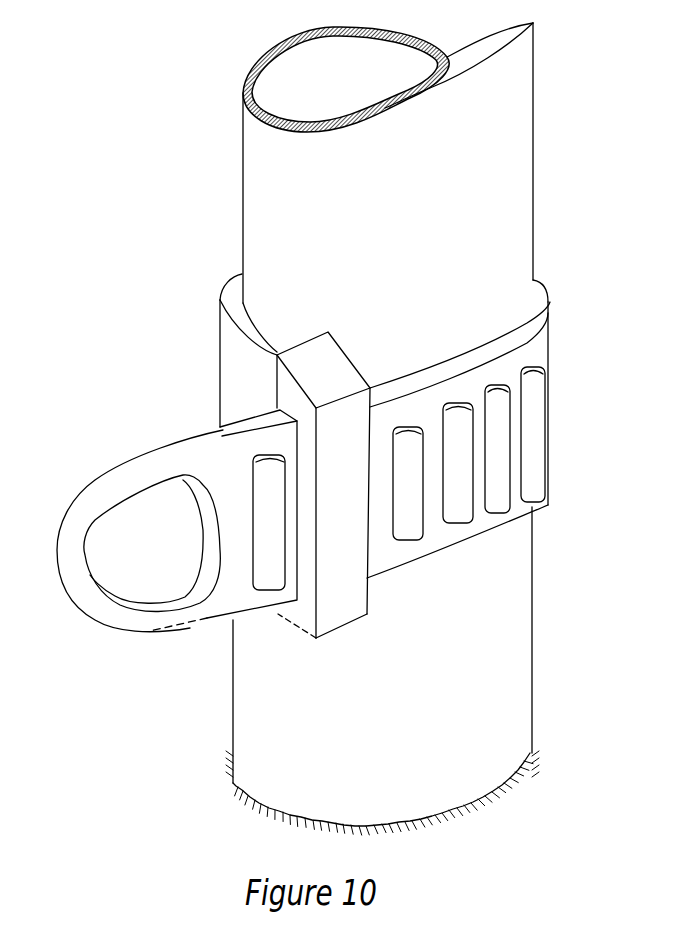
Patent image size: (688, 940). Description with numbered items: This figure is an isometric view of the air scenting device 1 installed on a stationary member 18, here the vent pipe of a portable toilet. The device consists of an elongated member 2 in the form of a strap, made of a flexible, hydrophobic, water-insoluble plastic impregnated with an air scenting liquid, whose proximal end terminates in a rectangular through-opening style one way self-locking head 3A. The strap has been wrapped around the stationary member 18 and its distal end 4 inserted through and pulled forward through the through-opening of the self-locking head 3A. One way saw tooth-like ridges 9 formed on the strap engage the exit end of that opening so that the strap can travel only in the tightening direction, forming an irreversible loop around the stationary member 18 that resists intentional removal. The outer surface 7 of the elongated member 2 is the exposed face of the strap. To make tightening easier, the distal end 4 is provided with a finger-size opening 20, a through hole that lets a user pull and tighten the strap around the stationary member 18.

The air scenting device 1 is at (576, 298).
The elongated member 2 is at (527, 330).
The one way self-locking head 3A is at (350, 613).
The distal end of elongated member 4 is at (220, 460).
The outer surface of elongated member 7 is at (230, 362).
The one way saw tooth-like ridges 9 is at (273, 573).
The stationary member 18 is at (522, 173).
The finger-size opening 20 is at (133, 577).